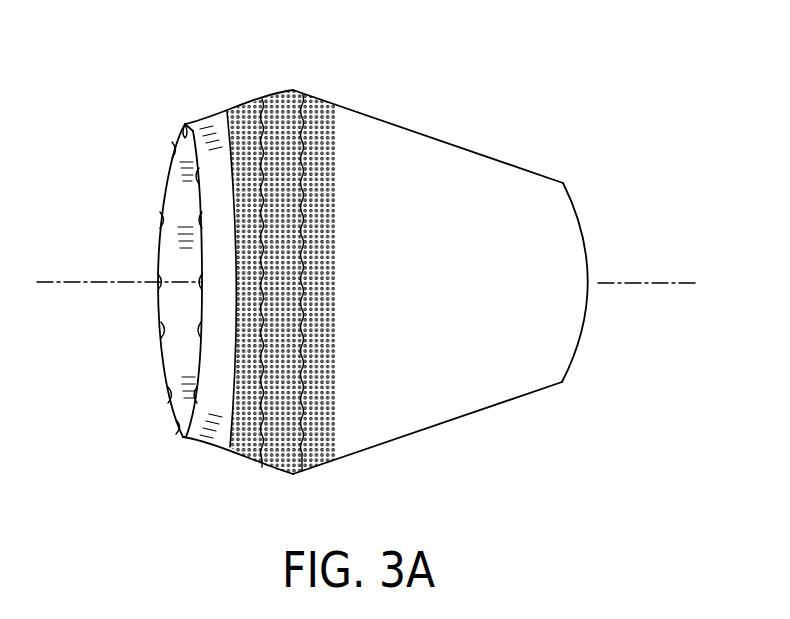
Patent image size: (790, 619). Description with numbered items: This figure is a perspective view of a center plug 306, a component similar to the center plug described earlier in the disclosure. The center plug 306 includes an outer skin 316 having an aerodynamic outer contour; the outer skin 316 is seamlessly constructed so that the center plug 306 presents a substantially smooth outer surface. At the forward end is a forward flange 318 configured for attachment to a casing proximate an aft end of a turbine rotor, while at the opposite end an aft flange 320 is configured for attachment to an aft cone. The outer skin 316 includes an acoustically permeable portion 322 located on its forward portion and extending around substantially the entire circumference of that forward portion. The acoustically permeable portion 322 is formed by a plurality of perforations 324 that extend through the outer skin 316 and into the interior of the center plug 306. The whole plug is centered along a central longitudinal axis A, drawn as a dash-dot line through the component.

The center plug 306 is at (578, 71).
The outer skin 316 is at (447, 400).
The forward flange 318 is at (166, 350).
The aft flange 320 is at (582, 232).
The acoustically permeable portion 322 is at (230, 480).
The perforations 324 is at (262, 110).
The central longitudinal axis A is at (650, 284).